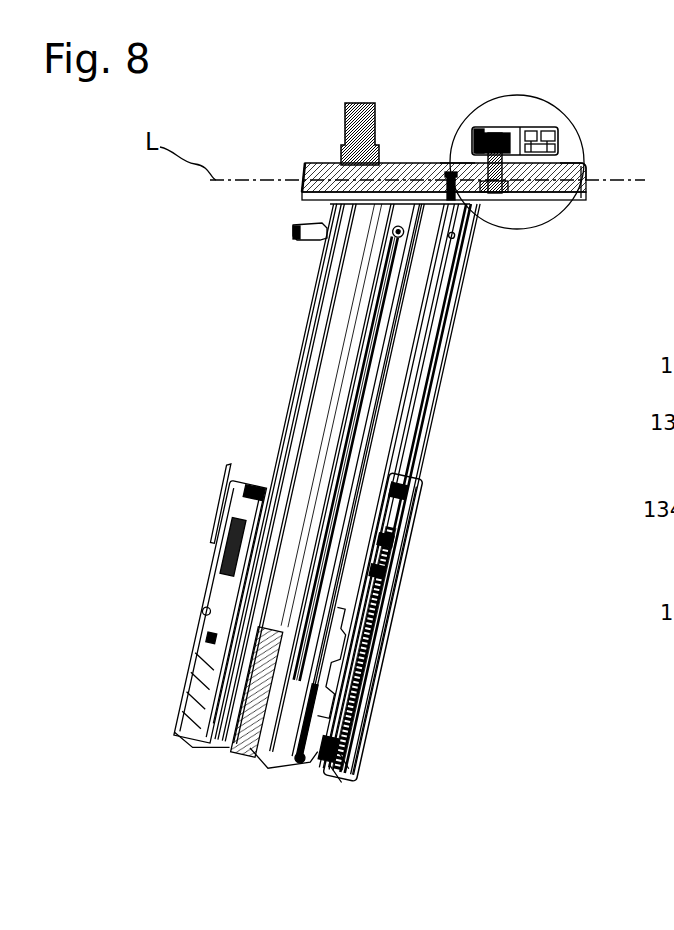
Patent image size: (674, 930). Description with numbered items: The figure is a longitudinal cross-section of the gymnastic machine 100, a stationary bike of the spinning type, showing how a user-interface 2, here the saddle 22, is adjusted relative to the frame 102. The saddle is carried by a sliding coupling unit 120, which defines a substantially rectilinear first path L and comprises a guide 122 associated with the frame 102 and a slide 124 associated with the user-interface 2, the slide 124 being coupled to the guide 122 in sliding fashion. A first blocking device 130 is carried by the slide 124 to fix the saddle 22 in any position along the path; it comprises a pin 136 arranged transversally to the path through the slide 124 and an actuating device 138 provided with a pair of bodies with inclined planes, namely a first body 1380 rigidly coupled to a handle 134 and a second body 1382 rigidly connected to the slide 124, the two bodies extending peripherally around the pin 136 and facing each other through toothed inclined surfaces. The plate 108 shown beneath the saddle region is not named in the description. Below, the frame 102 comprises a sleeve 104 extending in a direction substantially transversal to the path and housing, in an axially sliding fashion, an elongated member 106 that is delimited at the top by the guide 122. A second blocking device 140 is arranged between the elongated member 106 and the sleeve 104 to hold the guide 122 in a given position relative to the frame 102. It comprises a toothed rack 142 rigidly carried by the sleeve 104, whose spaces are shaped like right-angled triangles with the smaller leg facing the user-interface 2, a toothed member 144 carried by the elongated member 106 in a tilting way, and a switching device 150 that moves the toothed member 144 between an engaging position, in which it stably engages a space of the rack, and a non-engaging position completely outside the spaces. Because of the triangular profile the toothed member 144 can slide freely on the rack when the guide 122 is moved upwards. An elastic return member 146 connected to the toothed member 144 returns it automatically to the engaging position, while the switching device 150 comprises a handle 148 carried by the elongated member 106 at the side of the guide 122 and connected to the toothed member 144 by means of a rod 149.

The user-interface 2 is at (307, 124).
The saddle 22 is at (350, 128).
The gymnastic machine 100 is at (152, 744).
The frame 102 is at (362, 727).
The sleeve 104 is at (422, 585).
The elongated member 106 is at (420, 407).
The mounting plate 108 is at (297, 192).
The sliding coupling unit 120 is at (571, 226).
The guide 122 is at (456, 202).
The slide 124 is at (587, 199).
The first blocking device 130 is at (531, 188).
The handle 134 is at (546, 147).
The pin 136 is at (493, 127).
The actuating device with inclined-plane pair 138 is at (586, 167).
The first body 1380 is at (432, 139).
The second body 1382 is at (458, 130).
The second blocking device 140 is at (177, 594).
The toothed rack 142 is at (340, 750).
The toothed member 144 is at (310, 760).
The elastic return member 146 is at (280, 715).
The handle 148 is at (312, 240).
The rod 149 is at (390, 330).
The switching device 150 is at (346, 659).